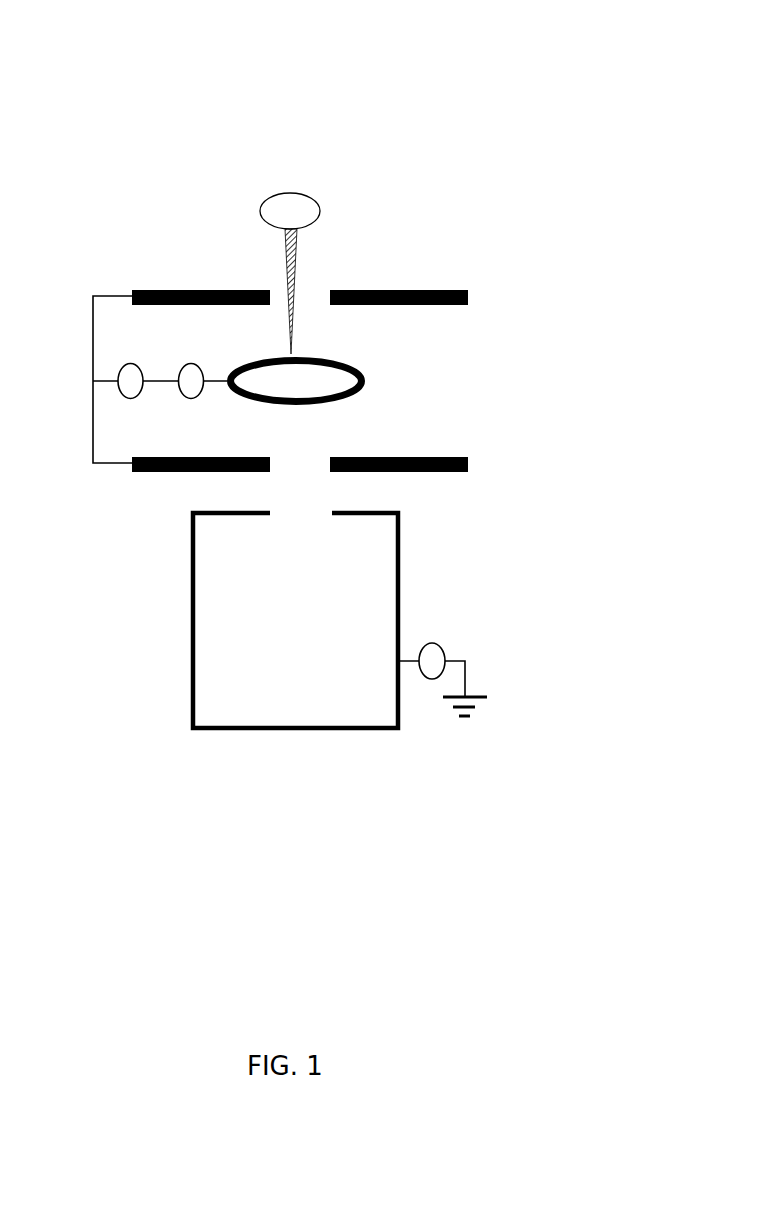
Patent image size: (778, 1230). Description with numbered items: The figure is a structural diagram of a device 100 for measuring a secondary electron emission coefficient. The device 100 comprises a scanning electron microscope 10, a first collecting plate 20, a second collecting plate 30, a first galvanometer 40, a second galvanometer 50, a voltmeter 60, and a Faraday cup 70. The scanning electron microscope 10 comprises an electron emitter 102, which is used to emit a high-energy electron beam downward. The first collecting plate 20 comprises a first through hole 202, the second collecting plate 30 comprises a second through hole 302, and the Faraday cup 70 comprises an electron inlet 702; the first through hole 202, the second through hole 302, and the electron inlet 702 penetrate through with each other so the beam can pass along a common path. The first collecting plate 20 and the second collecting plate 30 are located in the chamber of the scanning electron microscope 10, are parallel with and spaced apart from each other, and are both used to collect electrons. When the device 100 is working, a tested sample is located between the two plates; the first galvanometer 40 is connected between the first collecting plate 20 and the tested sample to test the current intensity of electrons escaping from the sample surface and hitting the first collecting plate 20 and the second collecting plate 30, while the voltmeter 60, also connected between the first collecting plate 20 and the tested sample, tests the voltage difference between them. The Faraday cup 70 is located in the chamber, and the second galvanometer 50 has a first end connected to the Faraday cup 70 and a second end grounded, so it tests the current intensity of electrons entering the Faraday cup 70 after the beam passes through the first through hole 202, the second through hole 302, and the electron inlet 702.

The device for measuring a secondary electron emission coefficient 100 is at (292, 110).
The scanning electron microscope 10 is at (243, 203).
The electron emitter 102 is at (313, 200).
The first through hole 202 is at (307, 290).
The first collecting plate 20 is at (421, 289).
The second collecting plate 30 is at (437, 473).
The second through hole 302 is at (302, 460).
The first galvanometer 40 is at (126, 394).
The voltmeter 60 is at (182, 395).
The Faraday cup 70 is at (399, 575).
The electron inlet 702 is at (280, 512).
The second galvanometer 50 is at (441, 646).